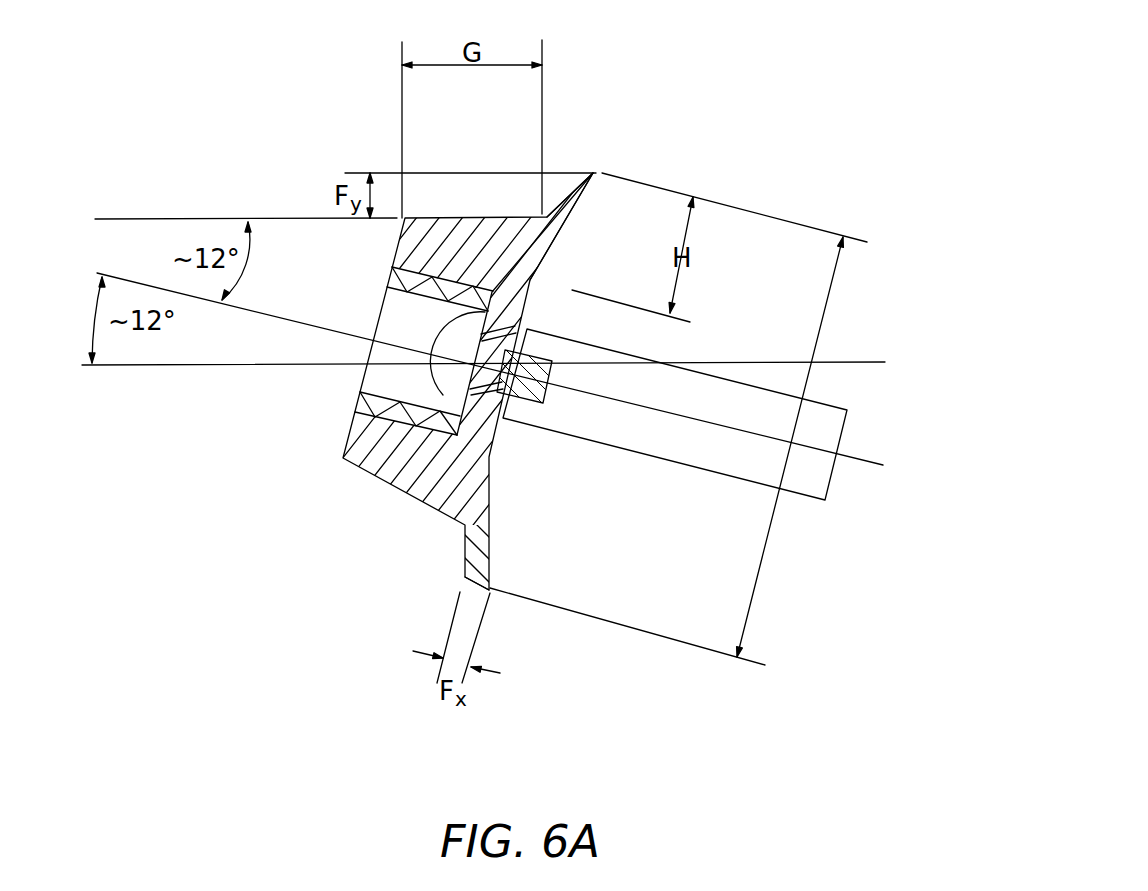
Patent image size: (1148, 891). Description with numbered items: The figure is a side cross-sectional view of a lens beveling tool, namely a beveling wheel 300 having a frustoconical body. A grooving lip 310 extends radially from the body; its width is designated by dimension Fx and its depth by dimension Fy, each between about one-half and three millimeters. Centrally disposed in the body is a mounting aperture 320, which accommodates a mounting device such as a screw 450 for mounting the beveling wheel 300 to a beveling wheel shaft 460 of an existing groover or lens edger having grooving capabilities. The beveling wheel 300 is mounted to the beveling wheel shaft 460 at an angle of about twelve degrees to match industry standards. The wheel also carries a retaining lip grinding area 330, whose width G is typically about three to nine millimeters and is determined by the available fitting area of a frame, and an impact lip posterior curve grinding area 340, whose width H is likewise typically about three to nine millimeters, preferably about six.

The beveling wheel 300 is at (350, 408).
The grooving lip 310 is at (463, 582).
The mounting aperture 320 is at (393, 393).
The retaining lip grinding area 330 is at (493, 218).
The impact lip posterior curve grinding area 340 is at (573, 218).
The screw 450 is at (447, 393).
The beveling wheel shaft 460 is at (640, 438).